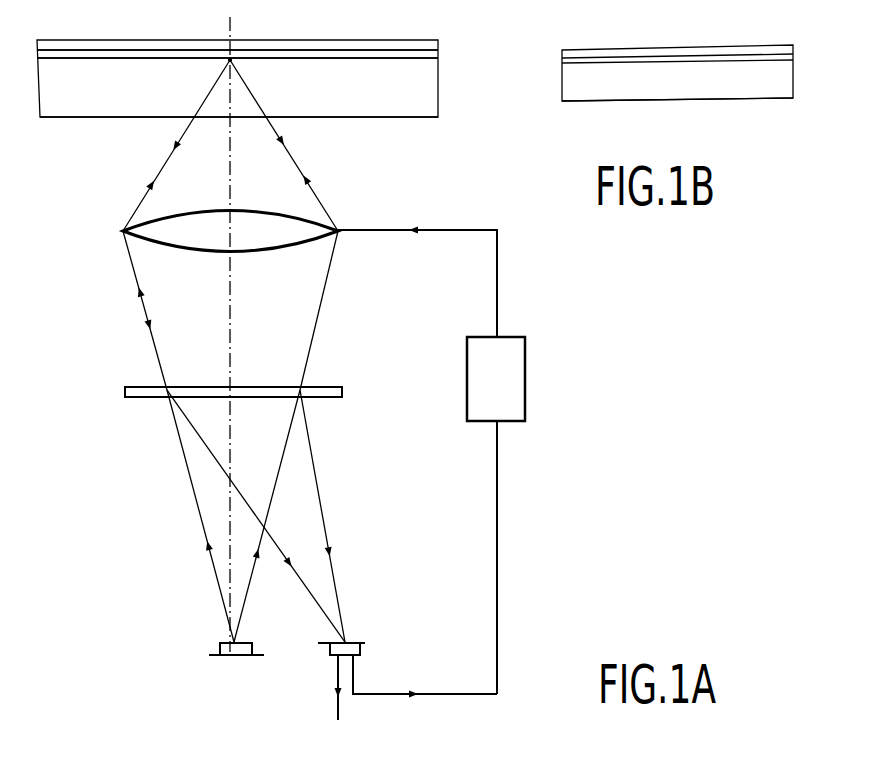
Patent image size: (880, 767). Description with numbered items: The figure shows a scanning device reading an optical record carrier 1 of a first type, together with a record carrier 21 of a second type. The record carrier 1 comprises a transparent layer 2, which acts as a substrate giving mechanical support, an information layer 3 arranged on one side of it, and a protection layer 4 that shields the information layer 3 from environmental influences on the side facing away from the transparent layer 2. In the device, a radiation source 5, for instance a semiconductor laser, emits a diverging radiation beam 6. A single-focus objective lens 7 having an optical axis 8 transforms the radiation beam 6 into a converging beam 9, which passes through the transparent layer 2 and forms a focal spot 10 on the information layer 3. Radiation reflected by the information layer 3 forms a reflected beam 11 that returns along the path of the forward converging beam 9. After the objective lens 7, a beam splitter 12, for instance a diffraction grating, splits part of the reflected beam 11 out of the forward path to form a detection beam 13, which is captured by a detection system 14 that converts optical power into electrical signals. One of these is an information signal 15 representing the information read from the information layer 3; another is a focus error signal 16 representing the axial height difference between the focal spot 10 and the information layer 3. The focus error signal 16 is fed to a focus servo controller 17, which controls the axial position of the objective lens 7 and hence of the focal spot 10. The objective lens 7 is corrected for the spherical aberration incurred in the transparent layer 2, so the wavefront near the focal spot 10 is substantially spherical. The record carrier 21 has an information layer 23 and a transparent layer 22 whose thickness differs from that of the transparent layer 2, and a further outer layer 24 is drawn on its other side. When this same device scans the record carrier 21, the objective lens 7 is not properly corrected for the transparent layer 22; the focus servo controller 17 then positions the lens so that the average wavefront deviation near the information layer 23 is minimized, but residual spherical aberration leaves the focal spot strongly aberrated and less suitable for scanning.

In FIG. 1A, the optical record carrier 1 is at (498, 31).
In FIG. 1A, the transparent layer 2 is at (428, 100).
In FIG. 1A, the information layer 3 is at (437, 56).
In FIG. 1A, the protection layer 4 is at (430, 42).
In FIG. 1A, the radiation source 5 is at (240, 657).
In FIG. 1A, the radiation beam 6 is at (193, 494).
In FIG. 1A, the objective lens 7 is at (148, 234).
In FIG. 1A, the optical axis 8 is at (227, 28).
In FIG. 1A, the converging beam 9 is at (190, 150).
In FIG. 1A, the focal spot 10 is at (232, 59).
In FIG. 1A, the reflected beam 11 is at (162, 184).
In FIG. 1A, the beam splitter 12 is at (125, 391).
In FIG. 1A, the detection beam 13 is at (325, 518).
In FIG. 1A, the detection system 14 is at (365, 641).
In FIG. 1A, the information signal 15 is at (336, 680).
In FIG. 1A, the focus error signal 16 is at (355, 672).
In FIG. 1A, the focus servo controller 17 is at (528, 374).
In FIG. 1B, the record carrier 21 is at (822, 30).
In FIG. 1B, the transparent layer 22 is at (780, 88).
In FIG. 1B, the information layer 23 is at (787, 60).
In FIG. 1B, the protective layer 24 is at (790, 50).